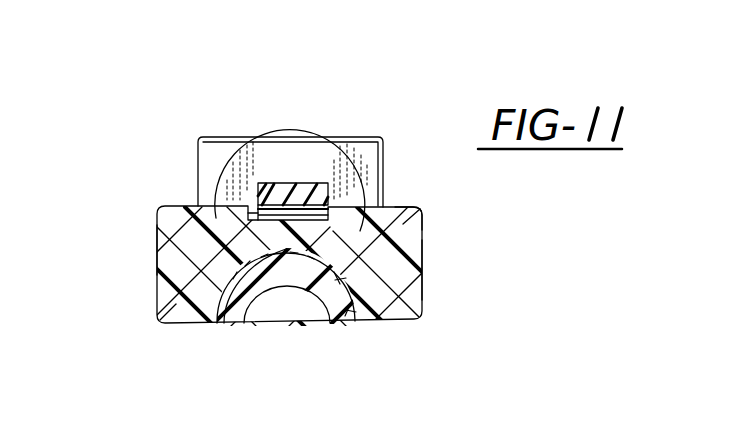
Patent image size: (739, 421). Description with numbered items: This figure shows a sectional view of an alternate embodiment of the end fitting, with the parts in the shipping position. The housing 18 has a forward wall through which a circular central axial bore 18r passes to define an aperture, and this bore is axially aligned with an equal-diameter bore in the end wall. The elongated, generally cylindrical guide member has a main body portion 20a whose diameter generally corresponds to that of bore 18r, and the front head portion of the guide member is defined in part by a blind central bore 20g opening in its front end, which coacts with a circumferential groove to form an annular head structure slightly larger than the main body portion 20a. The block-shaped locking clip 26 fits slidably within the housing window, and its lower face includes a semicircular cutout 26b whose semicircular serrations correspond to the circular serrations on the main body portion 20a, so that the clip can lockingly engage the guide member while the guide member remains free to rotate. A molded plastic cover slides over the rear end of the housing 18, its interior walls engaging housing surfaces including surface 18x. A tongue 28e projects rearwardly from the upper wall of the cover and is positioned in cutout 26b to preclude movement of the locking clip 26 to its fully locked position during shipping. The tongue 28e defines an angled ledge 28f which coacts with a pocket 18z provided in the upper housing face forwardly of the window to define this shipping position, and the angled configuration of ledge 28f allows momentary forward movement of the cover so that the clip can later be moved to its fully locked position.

The housing 18 is at (191, 231).
The housing surface 18x is at (157, 249).
The pocket 18z is at (166, 300).
The circular central axial bore 18r is at (358, 297).
The main body portion 20a is at (345, 318).
The blind central bore 20g is at (280, 294).
The locking clip 26 is at (328, 138).
The semicircular cutout 26b is at (313, 182).
The tongue 28e is at (262, 183).
The angled ledge 28f is at (420, 210).